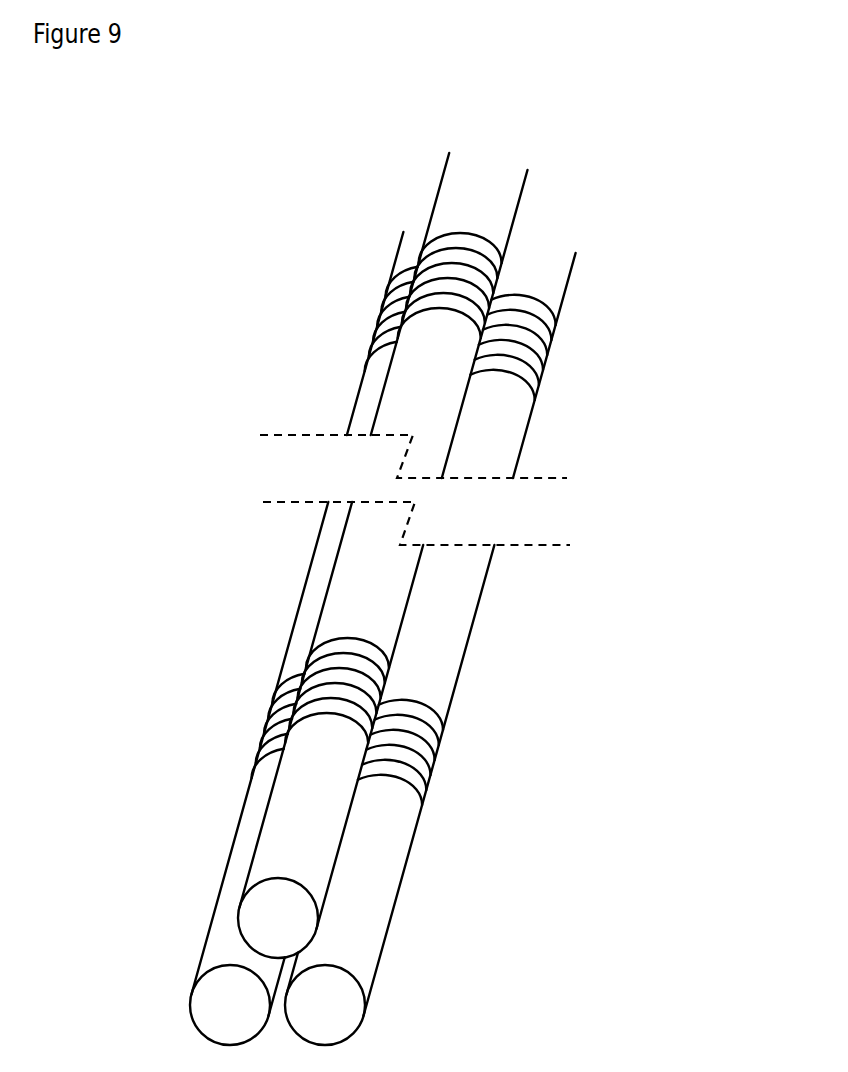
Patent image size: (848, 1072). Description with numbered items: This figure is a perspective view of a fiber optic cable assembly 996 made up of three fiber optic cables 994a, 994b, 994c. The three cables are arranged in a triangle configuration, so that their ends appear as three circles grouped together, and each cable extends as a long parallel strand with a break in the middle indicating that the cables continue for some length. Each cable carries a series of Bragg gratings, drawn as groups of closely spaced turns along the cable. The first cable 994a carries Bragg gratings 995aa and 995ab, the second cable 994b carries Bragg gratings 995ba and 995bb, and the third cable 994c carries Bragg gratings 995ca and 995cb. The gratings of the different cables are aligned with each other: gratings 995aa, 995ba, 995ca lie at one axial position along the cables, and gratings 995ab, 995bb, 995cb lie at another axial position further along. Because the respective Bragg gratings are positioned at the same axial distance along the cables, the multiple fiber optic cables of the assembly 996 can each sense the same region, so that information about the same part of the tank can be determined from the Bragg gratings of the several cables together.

The fiber optic cable 994a is at (435, 555).
The fiber optic cable 994b is at (447, 649).
The fiber optic cable 994c is at (405, 638).
The Bragg grating 995aa is at (488, 678).
The Bragg grating 995ba is at (513, 737).
The Bragg grating 995ca is at (464, 726).
The Bragg grating 995ab is at (599, 273).
The Bragg grating 995bb is at (623, 333).
The Bragg grating 995cb is at (574, 319).
The fiber optic cable assembly 996 is at (224, 529).